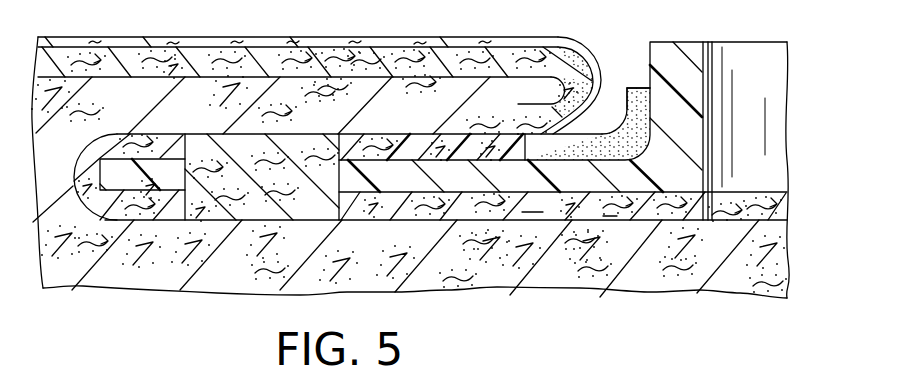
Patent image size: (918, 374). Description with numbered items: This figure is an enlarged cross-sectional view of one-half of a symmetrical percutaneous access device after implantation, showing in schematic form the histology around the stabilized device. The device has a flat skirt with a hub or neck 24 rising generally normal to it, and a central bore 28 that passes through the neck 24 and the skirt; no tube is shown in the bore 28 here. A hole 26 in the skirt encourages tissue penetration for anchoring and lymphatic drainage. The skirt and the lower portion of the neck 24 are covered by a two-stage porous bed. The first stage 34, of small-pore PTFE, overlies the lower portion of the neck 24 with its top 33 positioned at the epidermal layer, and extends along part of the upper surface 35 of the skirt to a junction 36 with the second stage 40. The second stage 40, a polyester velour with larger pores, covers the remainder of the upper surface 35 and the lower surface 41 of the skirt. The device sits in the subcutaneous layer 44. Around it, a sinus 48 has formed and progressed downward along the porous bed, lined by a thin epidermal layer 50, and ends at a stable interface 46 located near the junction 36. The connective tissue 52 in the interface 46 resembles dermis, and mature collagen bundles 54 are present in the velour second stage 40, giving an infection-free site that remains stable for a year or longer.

The neck 24 is at (650, 42).
The hole 26 is at (190, 147).
The central bore 28 is at (704, 92).
The top of first stage 33 is at (634, 87).
The first stage 34 is at (626, 90).
The upper surface of skirt 35 is at (417, 150).
The junction 36 is at (527, 160).
The second stage 40 is at (374, 132).
The lower surface of skirt 41 is at (395, 193).
The subcutaneous layer 44 is at (137, 116).
The interface 46 is at (502, 125).
The sinus 48 is at (610, 125).
The epidermal layer 50 is at (600, 69).
The connective tissue 52 is at (536, 114).
The collagen bundles 54 is at (462, 147).